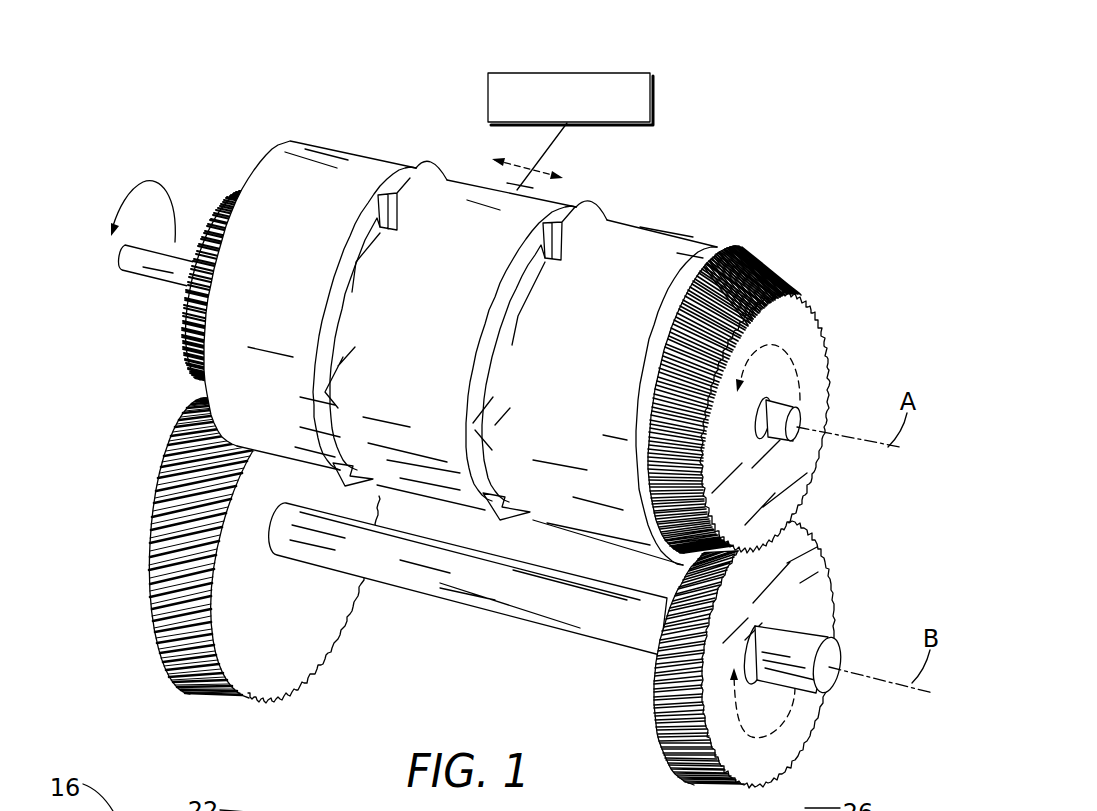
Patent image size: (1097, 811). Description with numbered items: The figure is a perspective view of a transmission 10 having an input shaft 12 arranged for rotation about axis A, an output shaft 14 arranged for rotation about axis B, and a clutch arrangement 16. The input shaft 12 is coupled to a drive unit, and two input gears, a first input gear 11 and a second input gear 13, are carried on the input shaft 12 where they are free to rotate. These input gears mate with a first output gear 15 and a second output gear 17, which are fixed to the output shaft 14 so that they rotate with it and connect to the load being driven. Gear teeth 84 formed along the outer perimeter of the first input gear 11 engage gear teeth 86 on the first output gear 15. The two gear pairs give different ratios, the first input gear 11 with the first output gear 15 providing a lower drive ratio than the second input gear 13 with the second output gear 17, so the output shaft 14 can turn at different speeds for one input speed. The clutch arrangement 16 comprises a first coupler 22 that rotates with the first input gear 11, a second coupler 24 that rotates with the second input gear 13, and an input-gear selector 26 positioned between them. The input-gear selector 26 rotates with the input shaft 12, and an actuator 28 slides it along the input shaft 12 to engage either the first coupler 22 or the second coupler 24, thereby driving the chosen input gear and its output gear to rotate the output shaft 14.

The transmission 10 is at (138, 152).
The first input gear 11 is at (205, 271).
The input shaft 12 is at (140, 295).
The second input gear 13 is at (774, 389).
The output shaft 14 is at (808, 638).
The first output gear 15 is at (235, 568).
The clutch arrangement 16 is at (409, 110).
The second output gear 17 is at (793, 642).
The first coupler 22 is at (331, 133).
The second coupler 24 is at (714, 228).
The input-gear selector 26 is at (482, 185).
The actuator 28 is at (595, 73).
The gear teeth 84 is at (188, 345).
The gear teeth 86 is at (185, 684).